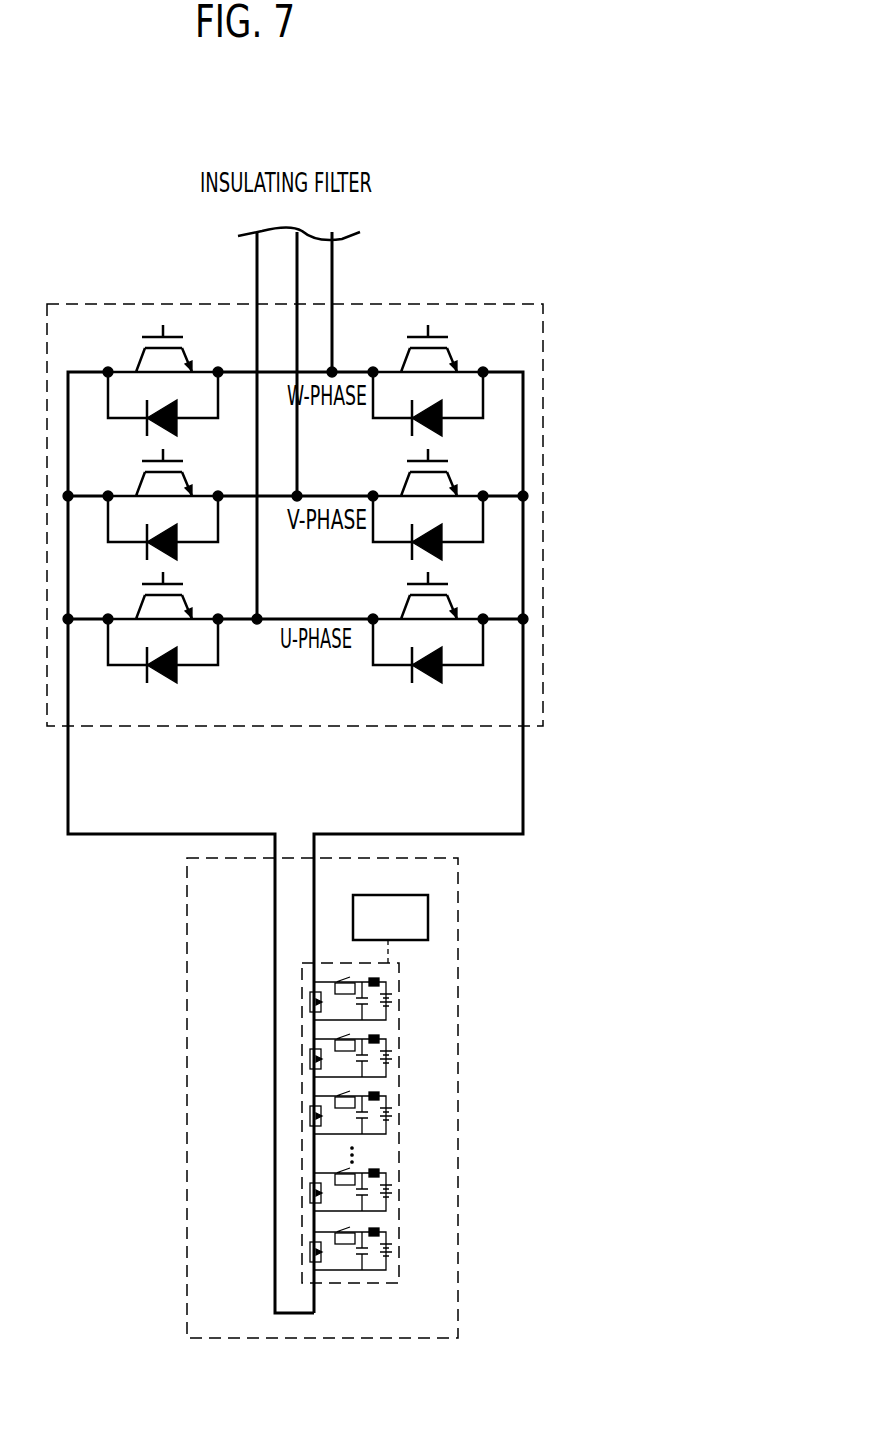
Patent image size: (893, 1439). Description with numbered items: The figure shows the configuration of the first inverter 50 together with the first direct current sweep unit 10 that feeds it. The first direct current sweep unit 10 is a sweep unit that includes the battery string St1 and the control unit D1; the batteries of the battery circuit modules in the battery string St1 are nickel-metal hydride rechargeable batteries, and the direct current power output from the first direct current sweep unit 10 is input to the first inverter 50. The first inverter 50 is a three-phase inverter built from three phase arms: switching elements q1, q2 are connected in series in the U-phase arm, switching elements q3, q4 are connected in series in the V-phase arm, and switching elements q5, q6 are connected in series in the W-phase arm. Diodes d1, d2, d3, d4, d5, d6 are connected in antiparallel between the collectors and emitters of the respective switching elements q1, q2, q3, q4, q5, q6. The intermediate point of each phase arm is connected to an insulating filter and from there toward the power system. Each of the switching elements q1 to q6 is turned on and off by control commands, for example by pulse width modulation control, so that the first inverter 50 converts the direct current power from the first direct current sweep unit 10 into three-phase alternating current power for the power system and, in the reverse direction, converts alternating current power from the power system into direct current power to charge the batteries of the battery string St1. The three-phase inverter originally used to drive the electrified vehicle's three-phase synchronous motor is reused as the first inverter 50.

The first inverter 50 is at (494, 305).
The first direct current sweep unit 10 is at (458, 1032).
The SCU D1 is at (410, 895).
The battery string St1 is at (338, 1285).
The switching element q1 is at (161, 598).
The switching element q2 is at (426, 598).
The switching element q3 is at (161, 475).
The switching element q4 is at (426, 475).
The switching element q5 is at (161, 351).
The switching element q6 is at (426, 351).
The diode d1 is at (167, 664).
The diode d2 is at (432, 664).
The diode d3 is at (167, 541).
The diode d4 is at (432, 541).
The diode d5 is at (167, 417).
The diode d6 is at (432, 417).